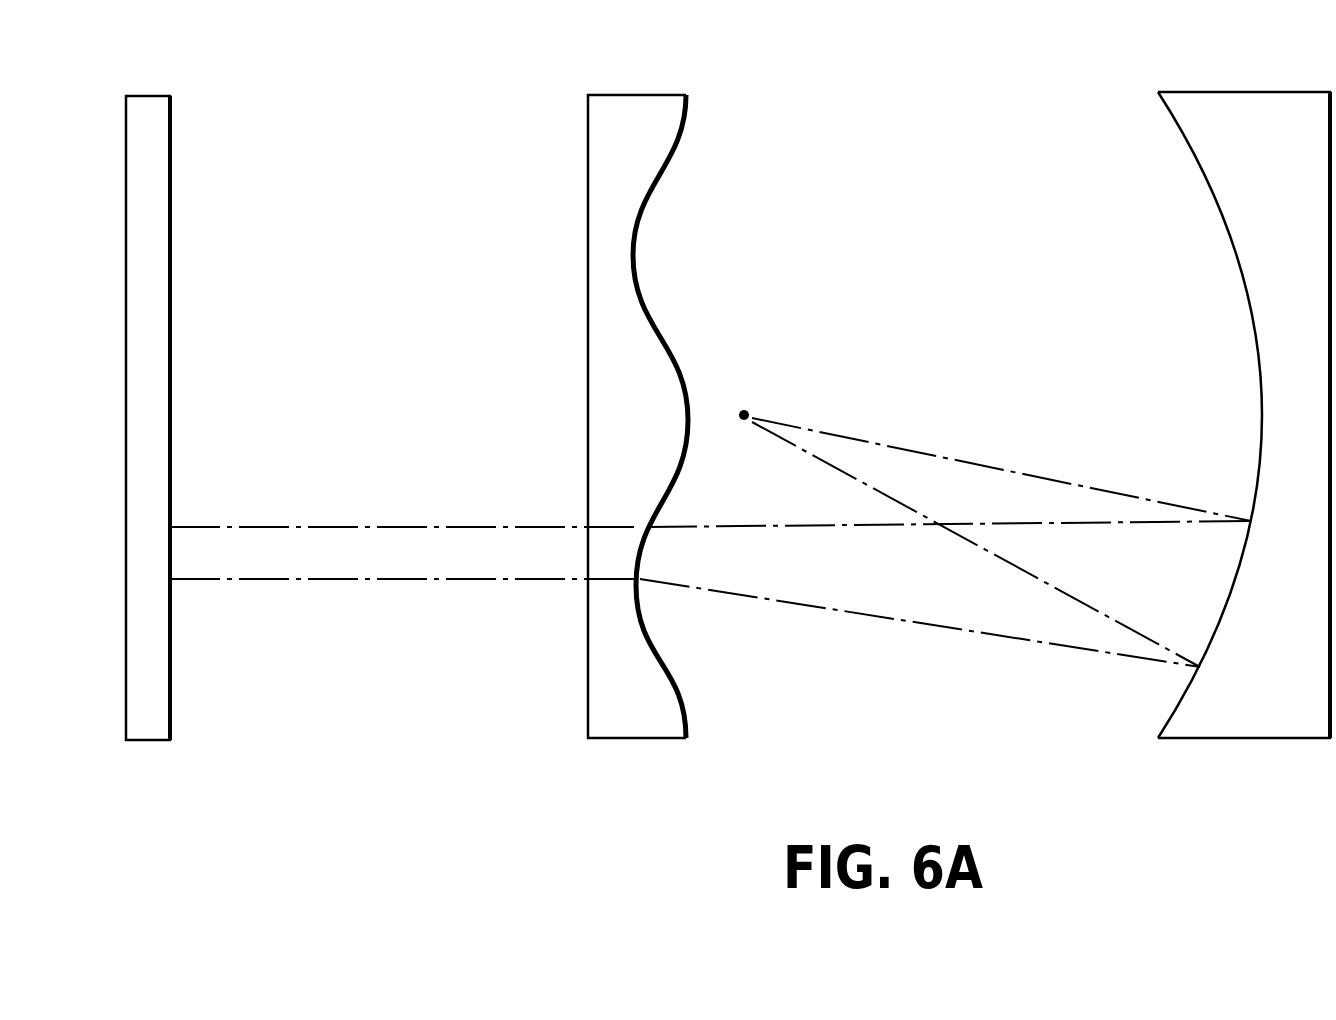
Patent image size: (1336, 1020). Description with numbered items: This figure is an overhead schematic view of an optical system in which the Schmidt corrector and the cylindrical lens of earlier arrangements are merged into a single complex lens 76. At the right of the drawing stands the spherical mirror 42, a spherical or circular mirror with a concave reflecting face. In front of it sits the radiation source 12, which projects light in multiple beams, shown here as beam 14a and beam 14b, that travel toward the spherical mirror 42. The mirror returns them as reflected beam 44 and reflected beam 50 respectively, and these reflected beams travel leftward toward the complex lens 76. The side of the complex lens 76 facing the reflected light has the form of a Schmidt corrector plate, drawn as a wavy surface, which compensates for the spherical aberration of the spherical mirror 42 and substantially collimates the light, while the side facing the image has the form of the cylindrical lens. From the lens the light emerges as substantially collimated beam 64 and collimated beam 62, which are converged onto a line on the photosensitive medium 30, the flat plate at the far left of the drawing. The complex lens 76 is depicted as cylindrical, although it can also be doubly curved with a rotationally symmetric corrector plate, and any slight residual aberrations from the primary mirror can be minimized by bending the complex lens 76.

The photosensitive medium 30 is at (155, 103).
The complex lens 76 is at (640, 103).
The spherical mirror 42 is at (1248, 100).
The substantially collimated beam 64 is at (380, 527).
The substantially collimated beam 62 is at (412, 578).
The reflected beam 44 is at (1088, 523).
The reflected beam 50 is at (877, 617).
The radiation source 12 is at (743, 410).
The light beam 14a is at (921, 448).
The light beam 14b is at (1115, 620).